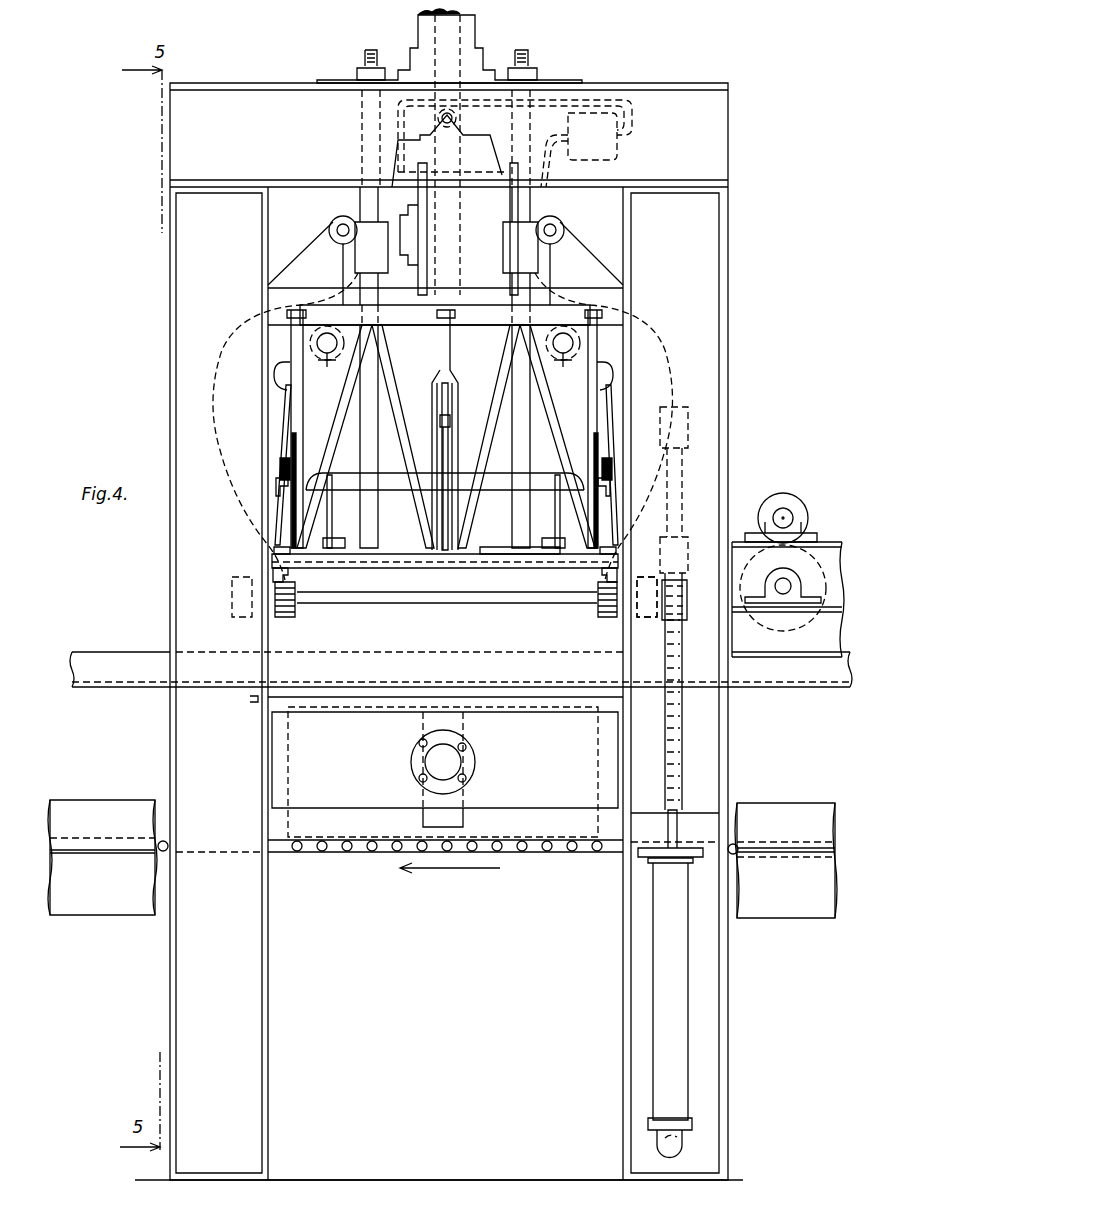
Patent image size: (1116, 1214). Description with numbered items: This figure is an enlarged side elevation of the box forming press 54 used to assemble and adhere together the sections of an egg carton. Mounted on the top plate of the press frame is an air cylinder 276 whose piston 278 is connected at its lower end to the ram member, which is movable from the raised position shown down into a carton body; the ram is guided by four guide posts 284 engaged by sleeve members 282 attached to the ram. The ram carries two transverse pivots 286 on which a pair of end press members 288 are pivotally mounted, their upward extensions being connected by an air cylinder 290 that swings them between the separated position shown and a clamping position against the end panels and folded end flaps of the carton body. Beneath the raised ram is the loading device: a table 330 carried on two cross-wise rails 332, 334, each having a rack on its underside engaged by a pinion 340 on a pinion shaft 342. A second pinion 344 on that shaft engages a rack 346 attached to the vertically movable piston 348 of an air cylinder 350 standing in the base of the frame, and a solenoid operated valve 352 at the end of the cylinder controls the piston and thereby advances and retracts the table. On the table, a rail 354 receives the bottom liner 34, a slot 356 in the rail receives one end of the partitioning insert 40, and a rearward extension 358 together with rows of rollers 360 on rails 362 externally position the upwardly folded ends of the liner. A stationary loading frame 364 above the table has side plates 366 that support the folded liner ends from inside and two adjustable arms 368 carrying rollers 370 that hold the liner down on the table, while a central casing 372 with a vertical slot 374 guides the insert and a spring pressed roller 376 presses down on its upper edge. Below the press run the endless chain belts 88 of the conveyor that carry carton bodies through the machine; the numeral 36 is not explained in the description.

The box forming press 54 is at (736, 153).
The air cylinder 276 is at (468, 33).
The piston 278 is at (418, 18).
The sleeve members 282 is at (560, 268).
The end press members 288 is at (332, 230).
The air cylinder 290 is at (445, 312).
The side plates 366 is at (595, 415).
The transverse pivots 286 is at (446, 360).
The loading frame 364 is at (497, 355).
The guide posts 284 is at (515, 425).
The casing 372 is at (462, 385).
The slot 374 is at (441, 400).
The spring pressed roller 376 is at (450, 422).
The partitioning insert 40 is at (452, 520).
The bottom liner 34 is at (390, 556).
The rollers 370 is at (557, 540).
The arms 368 is at (446, 534).
The lever 36 is at (283, 447).
The rollers 360 is at (604, 470).
The rails 362 is at (636, 520).
The slot 356 is at (445, 572).
The rail 354 is at (517, 542).
The rearward extension 358 is at (620, 552).
The rail 332 is at (272, 575).
The rail 334 is at (603, 576).
The pinion shaft 342 is at (450, 600).
The table 330 is at (296, 602).
The pinion 340 is at (606, 612).
The endless chain belts 88 is at (345, 858).
The second pinion 344 is at (690, 580).
The rack 346 is at (681, 752).
The piston 348 is at (680, 832).
The air cylinder 350 is at (665, 915).
The solenoid operated valve 352 is at (655, 1145).